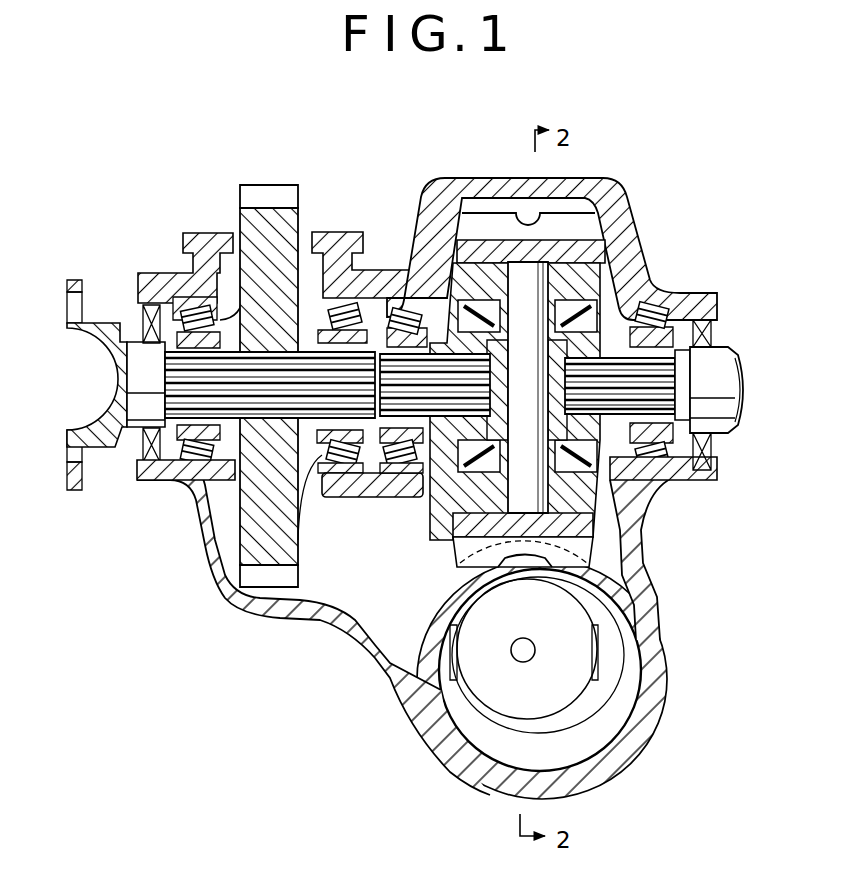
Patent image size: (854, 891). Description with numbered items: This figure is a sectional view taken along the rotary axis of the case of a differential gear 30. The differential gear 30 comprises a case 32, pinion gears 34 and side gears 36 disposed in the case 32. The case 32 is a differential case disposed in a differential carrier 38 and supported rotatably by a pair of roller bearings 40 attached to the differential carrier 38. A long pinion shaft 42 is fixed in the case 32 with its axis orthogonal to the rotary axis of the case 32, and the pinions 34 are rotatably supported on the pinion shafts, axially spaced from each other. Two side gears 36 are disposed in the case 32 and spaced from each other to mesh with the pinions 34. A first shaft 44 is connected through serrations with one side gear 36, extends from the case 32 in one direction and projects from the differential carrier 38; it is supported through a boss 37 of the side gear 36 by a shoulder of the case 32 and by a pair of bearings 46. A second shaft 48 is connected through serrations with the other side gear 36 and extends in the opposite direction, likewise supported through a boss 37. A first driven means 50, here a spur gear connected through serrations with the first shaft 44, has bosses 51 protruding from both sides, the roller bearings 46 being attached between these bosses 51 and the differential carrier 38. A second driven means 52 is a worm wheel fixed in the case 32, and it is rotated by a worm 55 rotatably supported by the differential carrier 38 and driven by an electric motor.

The differential gear 30 is at (380, 192).
The case 32 is at (450, 268).
The pinion gears 34 is at (512, 198).
The side gears 36 is at (463, 327).
The boss 37 is at (440, 425).
The differential carrier 38 is at (345, 637).
The roller bearings 40 is at (400, 316).
The long pinion shaft 42 is at (624, 246).
The first shaft 44 is at (147, 405).
The bearings 46 is at (166, 320).
The second shaft 48 is at (718, 425).
The first driven means 50 is at (292, 523).
The bosses 51 is at (330, 430).
The second driven means 52 is at (578, 193).
The worm 55 is at (435, 690).